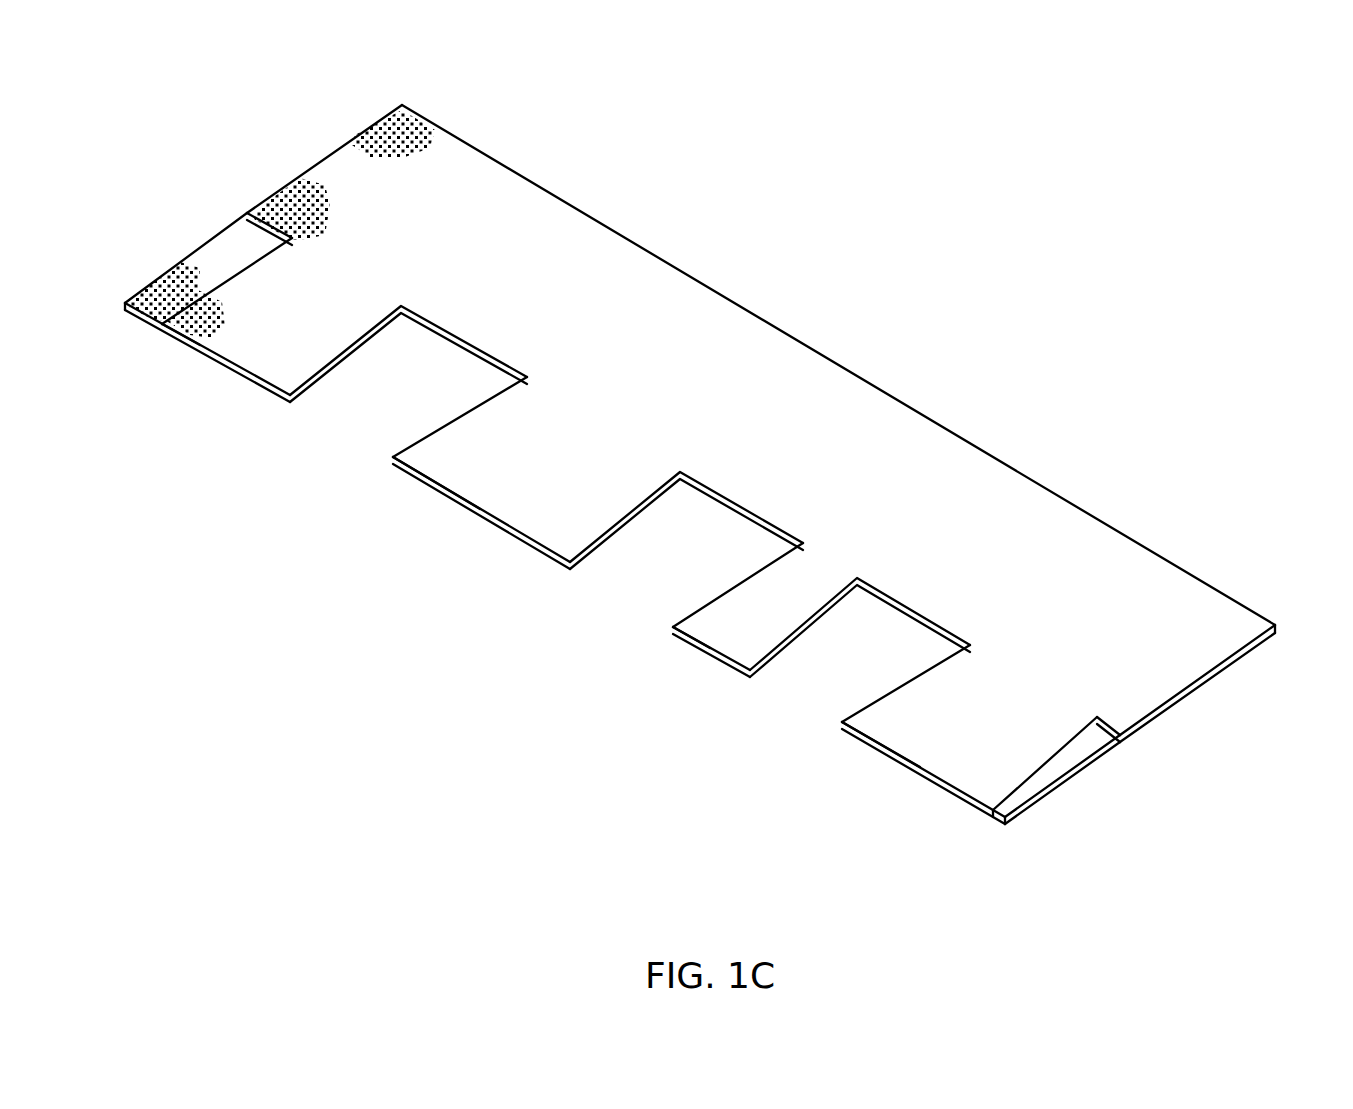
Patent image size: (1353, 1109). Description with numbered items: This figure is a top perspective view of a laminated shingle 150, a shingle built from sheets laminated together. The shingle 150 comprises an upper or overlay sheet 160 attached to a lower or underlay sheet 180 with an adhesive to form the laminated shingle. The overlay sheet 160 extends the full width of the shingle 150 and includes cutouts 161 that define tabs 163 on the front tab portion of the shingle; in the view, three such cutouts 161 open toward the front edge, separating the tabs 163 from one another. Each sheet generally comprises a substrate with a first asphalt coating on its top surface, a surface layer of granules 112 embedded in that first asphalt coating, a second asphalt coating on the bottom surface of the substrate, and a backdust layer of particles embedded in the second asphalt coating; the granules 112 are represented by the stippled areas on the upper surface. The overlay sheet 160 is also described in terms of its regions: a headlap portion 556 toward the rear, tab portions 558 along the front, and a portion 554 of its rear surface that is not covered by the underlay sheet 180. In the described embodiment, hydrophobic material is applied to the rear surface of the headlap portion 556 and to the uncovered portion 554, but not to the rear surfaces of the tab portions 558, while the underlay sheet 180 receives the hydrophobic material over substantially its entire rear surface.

The shingle 150 is at (778, 288).
The overlay sheet 160 is at (862, 430).
The cutouts 161 is at (352, 403).
The tabs 163 is at (495, 482).
The underlay sheet 180 is at (643, 587).
The tab portions 558 is at (237, 338).
The headlap portion 556 is at (402, 105).
The portion of the rear surface 554 is at (1275, 633).
The granules 112 is at (425, 118).